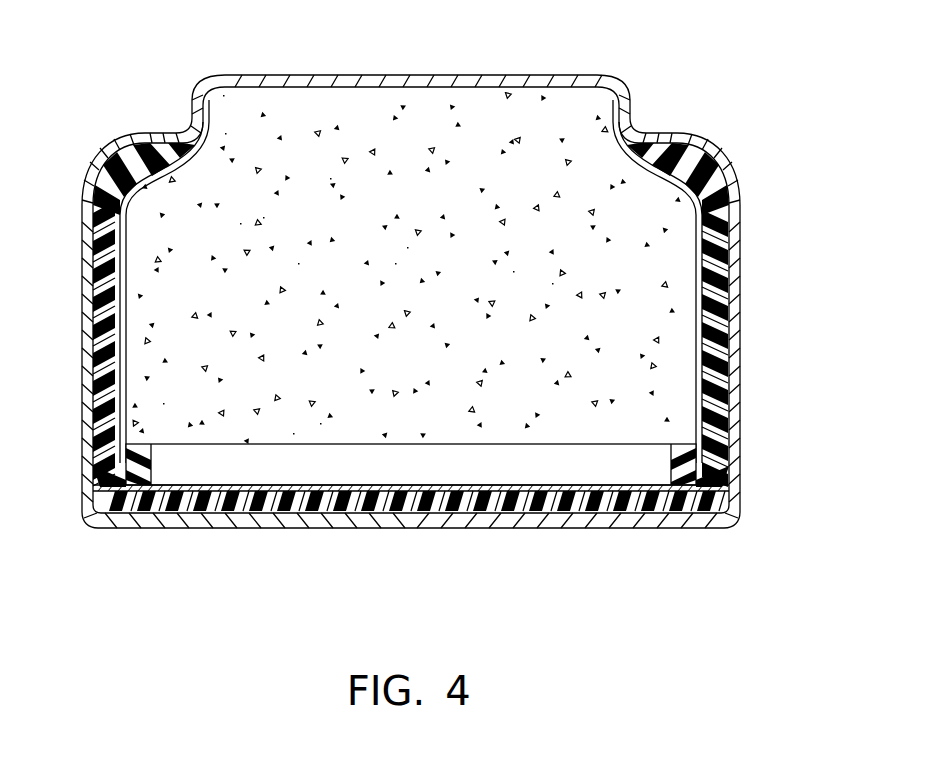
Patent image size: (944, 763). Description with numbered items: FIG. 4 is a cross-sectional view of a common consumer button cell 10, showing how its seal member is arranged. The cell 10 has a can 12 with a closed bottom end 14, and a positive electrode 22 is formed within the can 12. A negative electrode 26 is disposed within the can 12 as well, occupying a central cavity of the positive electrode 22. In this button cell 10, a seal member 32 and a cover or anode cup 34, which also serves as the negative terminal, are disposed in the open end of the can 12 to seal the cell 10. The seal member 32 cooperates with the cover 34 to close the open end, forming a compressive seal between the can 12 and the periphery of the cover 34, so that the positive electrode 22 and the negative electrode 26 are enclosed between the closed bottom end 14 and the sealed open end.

The cell 10 is at (435, 300).
The can 12 is at (736, 316).
The closed bottom end 14 is at (216, 530).
The positive electrode 22 is at (728, 518).
The negative electrode 26 is at (239, 122).
The seal member 32 is at (106, 254).
The cover 34 is at (313, 82).